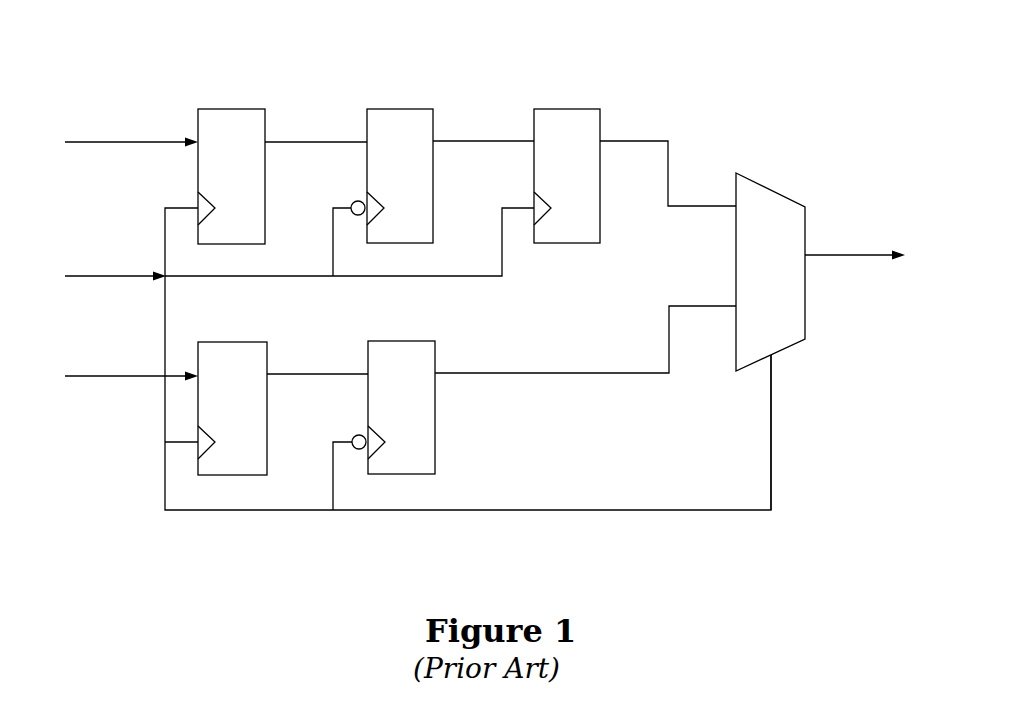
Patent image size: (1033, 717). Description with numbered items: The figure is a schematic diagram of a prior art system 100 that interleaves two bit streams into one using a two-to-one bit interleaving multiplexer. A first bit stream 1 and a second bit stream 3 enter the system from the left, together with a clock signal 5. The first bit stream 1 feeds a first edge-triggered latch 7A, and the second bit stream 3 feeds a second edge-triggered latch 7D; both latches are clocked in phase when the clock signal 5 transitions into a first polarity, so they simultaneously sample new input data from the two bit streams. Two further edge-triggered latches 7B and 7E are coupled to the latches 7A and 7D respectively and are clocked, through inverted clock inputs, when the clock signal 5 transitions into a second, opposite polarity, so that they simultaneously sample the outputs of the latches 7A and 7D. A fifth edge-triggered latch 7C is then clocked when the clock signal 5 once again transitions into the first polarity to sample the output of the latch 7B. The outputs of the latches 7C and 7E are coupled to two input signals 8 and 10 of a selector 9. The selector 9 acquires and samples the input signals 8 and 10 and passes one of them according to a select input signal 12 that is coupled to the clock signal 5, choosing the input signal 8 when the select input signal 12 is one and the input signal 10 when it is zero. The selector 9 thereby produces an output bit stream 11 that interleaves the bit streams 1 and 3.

The system 100 is at (485, 258).
The first bit stream 1 is at (131, 130).
The clock signal 5 is at (418, 359).
The second bit stream 3 is at (131, 368).
The first edge-triggered latch 7A is at (231, 176).
The edge-triggered latch 7B is at (349, 176).
The fifth edge-triggered latch 7C is at (516, 176).
The second edge-triggered latch 7D is at (232, 408).
The edge-triggered latch 7E is at (351, 407).
The input signal 8 is at (668, 173).
The input signal 10 is at (585, 325).
The selector 9 is at (770, 272).
The output bit stream 11 is at (855, 241).
The select input signal 12 is at (798, 432).